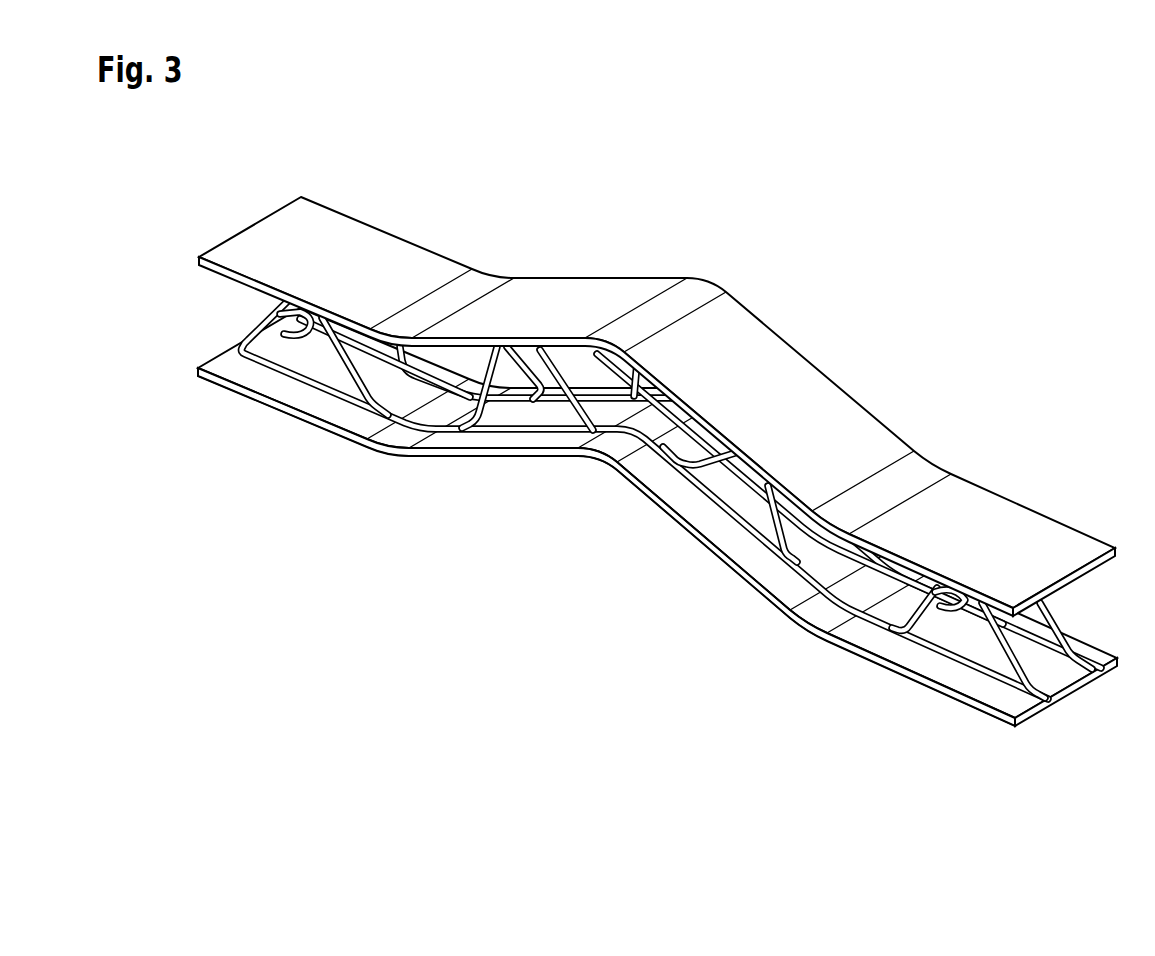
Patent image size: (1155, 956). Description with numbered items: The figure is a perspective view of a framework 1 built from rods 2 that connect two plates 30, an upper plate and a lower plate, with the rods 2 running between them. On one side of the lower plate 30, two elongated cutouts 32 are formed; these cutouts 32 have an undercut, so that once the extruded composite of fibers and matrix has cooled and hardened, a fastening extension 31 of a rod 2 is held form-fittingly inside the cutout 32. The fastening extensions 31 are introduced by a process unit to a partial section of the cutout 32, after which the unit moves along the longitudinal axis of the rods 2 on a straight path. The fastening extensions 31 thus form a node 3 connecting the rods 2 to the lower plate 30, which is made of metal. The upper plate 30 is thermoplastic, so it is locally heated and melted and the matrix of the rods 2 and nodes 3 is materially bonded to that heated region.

The framework 1 is at (672, 456).
The rods 2 is at (347, 367).
The node 3 is at (657, 517).
The fastening extension 31 is at (366, 415).
The plate 30 is at (820, 418).
The elongated cutout 32 is at (306, 387).